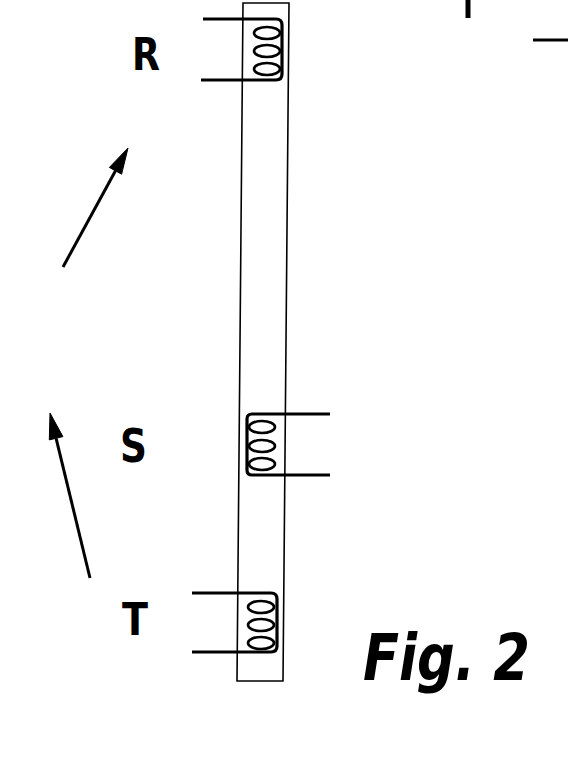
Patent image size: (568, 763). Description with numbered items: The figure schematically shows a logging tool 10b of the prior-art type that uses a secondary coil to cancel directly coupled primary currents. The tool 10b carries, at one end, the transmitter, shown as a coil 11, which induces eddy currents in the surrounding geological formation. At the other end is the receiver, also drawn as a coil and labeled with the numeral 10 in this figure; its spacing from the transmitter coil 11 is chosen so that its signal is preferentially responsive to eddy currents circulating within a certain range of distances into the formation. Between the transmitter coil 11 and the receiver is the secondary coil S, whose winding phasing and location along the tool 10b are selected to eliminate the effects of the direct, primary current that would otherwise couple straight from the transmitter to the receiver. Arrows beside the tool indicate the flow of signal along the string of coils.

The winding coil 10 is at (275, 613).
The tool 10b is at (265, 300).
The coil 11 is at (280, 48).